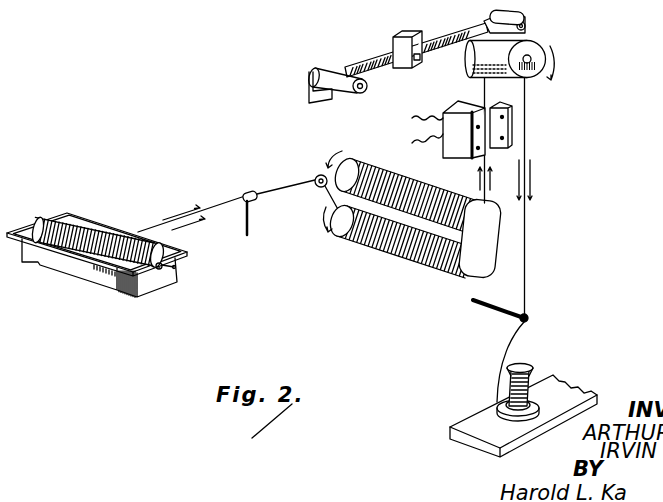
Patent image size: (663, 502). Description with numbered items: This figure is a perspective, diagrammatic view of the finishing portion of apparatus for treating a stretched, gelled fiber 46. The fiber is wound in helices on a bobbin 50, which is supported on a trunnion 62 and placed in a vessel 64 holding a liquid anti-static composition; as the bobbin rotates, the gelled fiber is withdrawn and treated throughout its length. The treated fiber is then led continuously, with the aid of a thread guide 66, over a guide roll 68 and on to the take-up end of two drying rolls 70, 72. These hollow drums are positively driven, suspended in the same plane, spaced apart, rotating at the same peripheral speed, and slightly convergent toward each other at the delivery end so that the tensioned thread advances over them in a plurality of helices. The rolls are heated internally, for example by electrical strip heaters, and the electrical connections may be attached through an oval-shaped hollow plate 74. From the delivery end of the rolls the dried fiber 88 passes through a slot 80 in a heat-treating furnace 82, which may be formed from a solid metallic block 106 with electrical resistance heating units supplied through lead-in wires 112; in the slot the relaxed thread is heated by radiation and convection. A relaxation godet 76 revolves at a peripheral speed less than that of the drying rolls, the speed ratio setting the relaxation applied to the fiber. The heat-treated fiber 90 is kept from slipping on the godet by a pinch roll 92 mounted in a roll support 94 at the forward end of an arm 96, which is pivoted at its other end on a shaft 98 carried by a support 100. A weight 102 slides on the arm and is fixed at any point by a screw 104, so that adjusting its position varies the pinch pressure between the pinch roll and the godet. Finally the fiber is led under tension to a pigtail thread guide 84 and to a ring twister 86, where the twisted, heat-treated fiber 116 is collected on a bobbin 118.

The stretched, gelled fiber 46 is at (140, 231).
The bobbin 50 is at (78, 220).
The trunnion 62 is at (178, 266).
The vessel 64 is at (152, 290).
The thread guide 66 is at (247, 236).
The guide roll 68 is at (316, 177).
The drying roll 70 is at (352, 160).
The drying roll 72 is at (340, 234).
The oval-shaped hollow plate 74 is at (473, 260).
The relaxation godet 76 is at (548, 43).
The slot 80 is at (492, 106).
The heat-treating furnace 82 is at (450, 97).
The pigtail thread guide 84 is at (527, 317).
The ring twister 86 is at (457, 415).
The dried fiber 88 is at (482, 189).
The heat-treated fiber 90 is at (486, 91).
The pinch roll 92 is at (532, 14).
The roll support 94 is at (483, 22).
The arm 96 is at (386, 62).
The shaft 98 is at (353, 92).
The support 100 is at (308, 90).
The weight 102 is at (393, 40).
The screw 104 is at (414, 62).
The metallic block 106 is at (412, 144).
The lead-in wires 112 is at (409, 116).
The twisted, heat-treated fiber 116 is at (533, 383).
The bobbin 118 is at (527, 364).